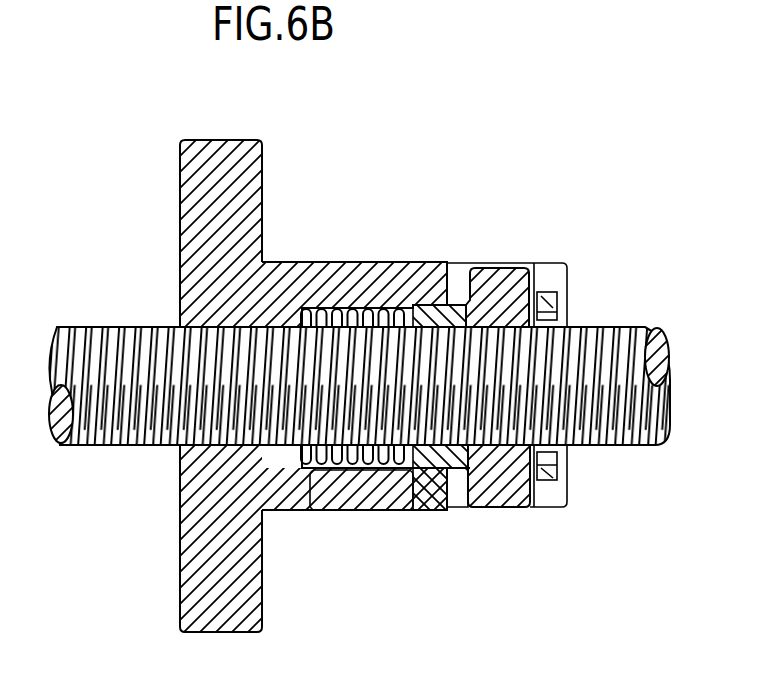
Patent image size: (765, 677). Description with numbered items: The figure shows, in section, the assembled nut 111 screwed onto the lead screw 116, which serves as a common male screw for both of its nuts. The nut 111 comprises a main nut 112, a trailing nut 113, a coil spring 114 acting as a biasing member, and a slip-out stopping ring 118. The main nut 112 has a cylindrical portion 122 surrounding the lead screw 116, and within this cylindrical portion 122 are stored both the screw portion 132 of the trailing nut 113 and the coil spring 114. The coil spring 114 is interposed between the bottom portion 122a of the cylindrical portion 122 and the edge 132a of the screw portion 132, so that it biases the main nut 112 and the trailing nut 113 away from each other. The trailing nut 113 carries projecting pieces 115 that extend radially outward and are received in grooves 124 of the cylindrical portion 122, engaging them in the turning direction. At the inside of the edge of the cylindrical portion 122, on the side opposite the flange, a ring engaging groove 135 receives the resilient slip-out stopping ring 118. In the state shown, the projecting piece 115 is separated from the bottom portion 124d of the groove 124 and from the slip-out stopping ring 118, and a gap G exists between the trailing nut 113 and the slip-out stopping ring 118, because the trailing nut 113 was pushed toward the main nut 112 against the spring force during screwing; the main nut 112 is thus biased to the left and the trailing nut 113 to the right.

The nut 111 is at (348, 218).
The main nut 112 is at (268, 169).
The trailing nut 113 is at (496, 254).
The coil spring 114 is at (347, 298).
The projecting piece 115 is at (525, 268).
The lead screw 116 is at (87, 327).
The slip-out stopping ring 118 is at (557, 298).
The cylindrical portion 122 is at (327, 292).
The bottom portion of the cylindrical portion 122a is at (307, 510).
The groove 124 is at (552, 278).
The bottom portion of the terminal portion 124d is at (465, 272).
The screw portion 132 is at (428, 510).
The edge of the screw portion 132a is at (392, 510).
The ring engaging groove 135 is at (567, 473).
The gap G is at (535, 508).